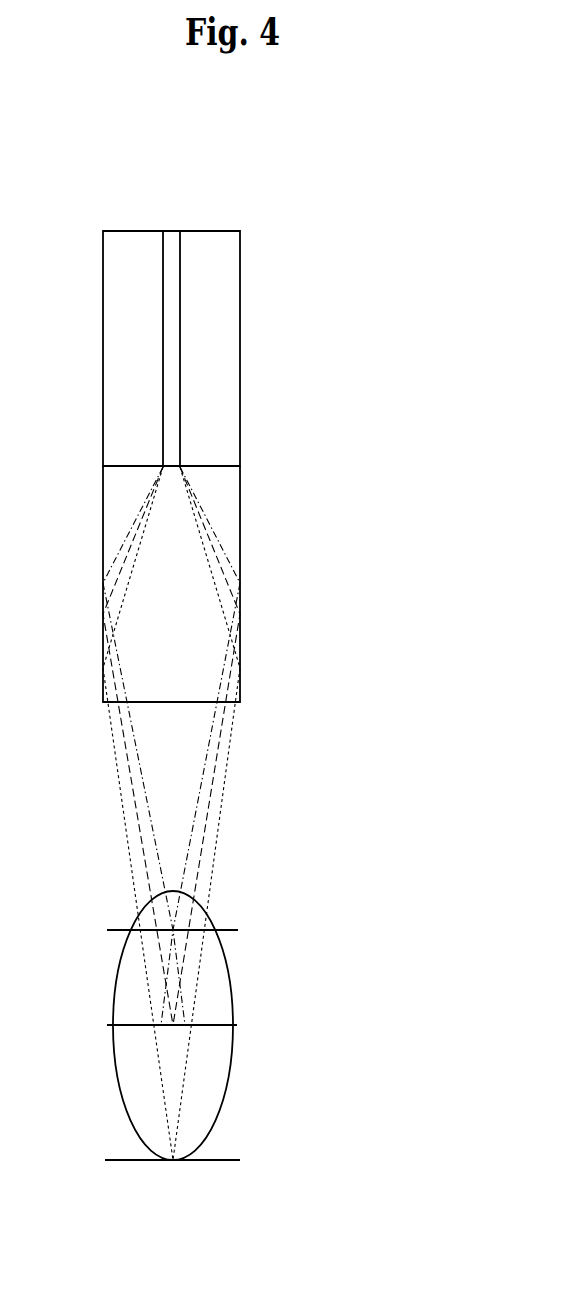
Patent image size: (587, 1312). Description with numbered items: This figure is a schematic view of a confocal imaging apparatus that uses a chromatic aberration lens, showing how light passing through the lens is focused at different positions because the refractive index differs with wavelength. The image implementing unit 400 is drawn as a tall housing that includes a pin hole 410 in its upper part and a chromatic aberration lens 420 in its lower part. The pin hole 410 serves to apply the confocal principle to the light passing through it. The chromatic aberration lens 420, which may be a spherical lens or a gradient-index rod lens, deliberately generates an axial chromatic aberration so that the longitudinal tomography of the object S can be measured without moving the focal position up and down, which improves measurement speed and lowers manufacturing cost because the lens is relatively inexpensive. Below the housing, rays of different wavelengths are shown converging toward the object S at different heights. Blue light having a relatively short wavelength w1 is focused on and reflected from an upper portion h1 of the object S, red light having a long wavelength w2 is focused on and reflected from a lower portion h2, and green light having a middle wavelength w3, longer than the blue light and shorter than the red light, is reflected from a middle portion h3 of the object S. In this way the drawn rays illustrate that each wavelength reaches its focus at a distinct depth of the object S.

The image implementing unit 400 is at (432, 267).
The pin hole 410 is at (182, 378).
The chromatic aberration lens 420 is at (241, 502).
The short wavelength w1 is at (150, 816).
The long wavelength w2 is at (147, 862).
The middle wavelength w3 is at (145, 970).
The object S is at (229, 975).
The upper portion h1 is at (191, 931).
The lower portion h2 is at (191, 1026).
The middle portion h3 is at (190, 1161).